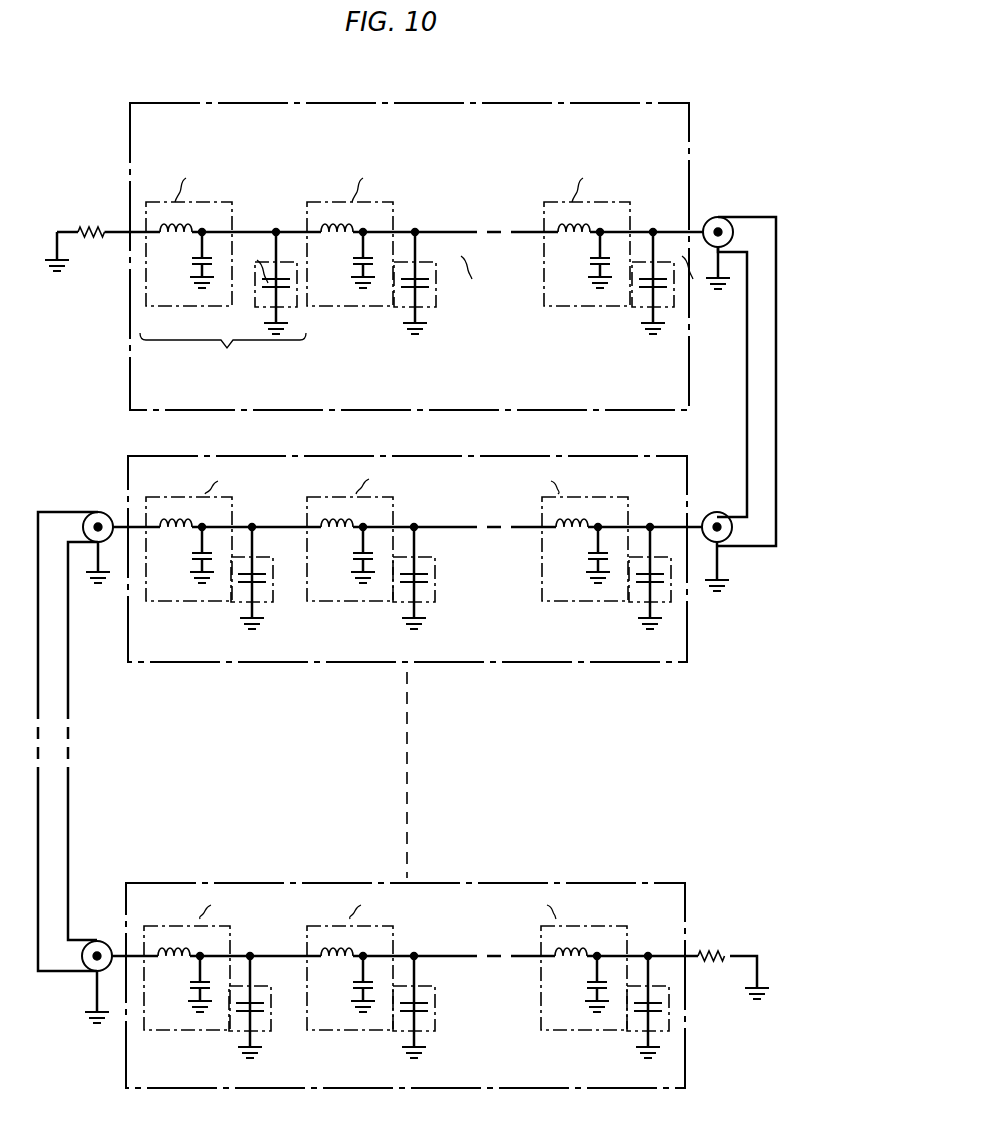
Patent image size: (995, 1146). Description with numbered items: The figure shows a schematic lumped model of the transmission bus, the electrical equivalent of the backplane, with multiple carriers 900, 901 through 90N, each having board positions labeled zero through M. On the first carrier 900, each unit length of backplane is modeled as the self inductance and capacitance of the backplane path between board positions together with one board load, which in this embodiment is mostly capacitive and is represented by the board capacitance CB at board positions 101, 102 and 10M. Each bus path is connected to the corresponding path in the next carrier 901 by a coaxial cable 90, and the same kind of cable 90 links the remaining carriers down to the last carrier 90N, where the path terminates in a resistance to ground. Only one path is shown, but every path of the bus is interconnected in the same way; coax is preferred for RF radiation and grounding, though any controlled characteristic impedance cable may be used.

The carrier 900 is at (389, 235).
The carrier 901 is at (608, 456).
The carrier 90N is at (616, 883).
The coaxial cable 90 is at (781, 404).
The board position 101 is at (290, 303).
The board position 102 is at (429, 303).
The board position 10M is at (633, 308).